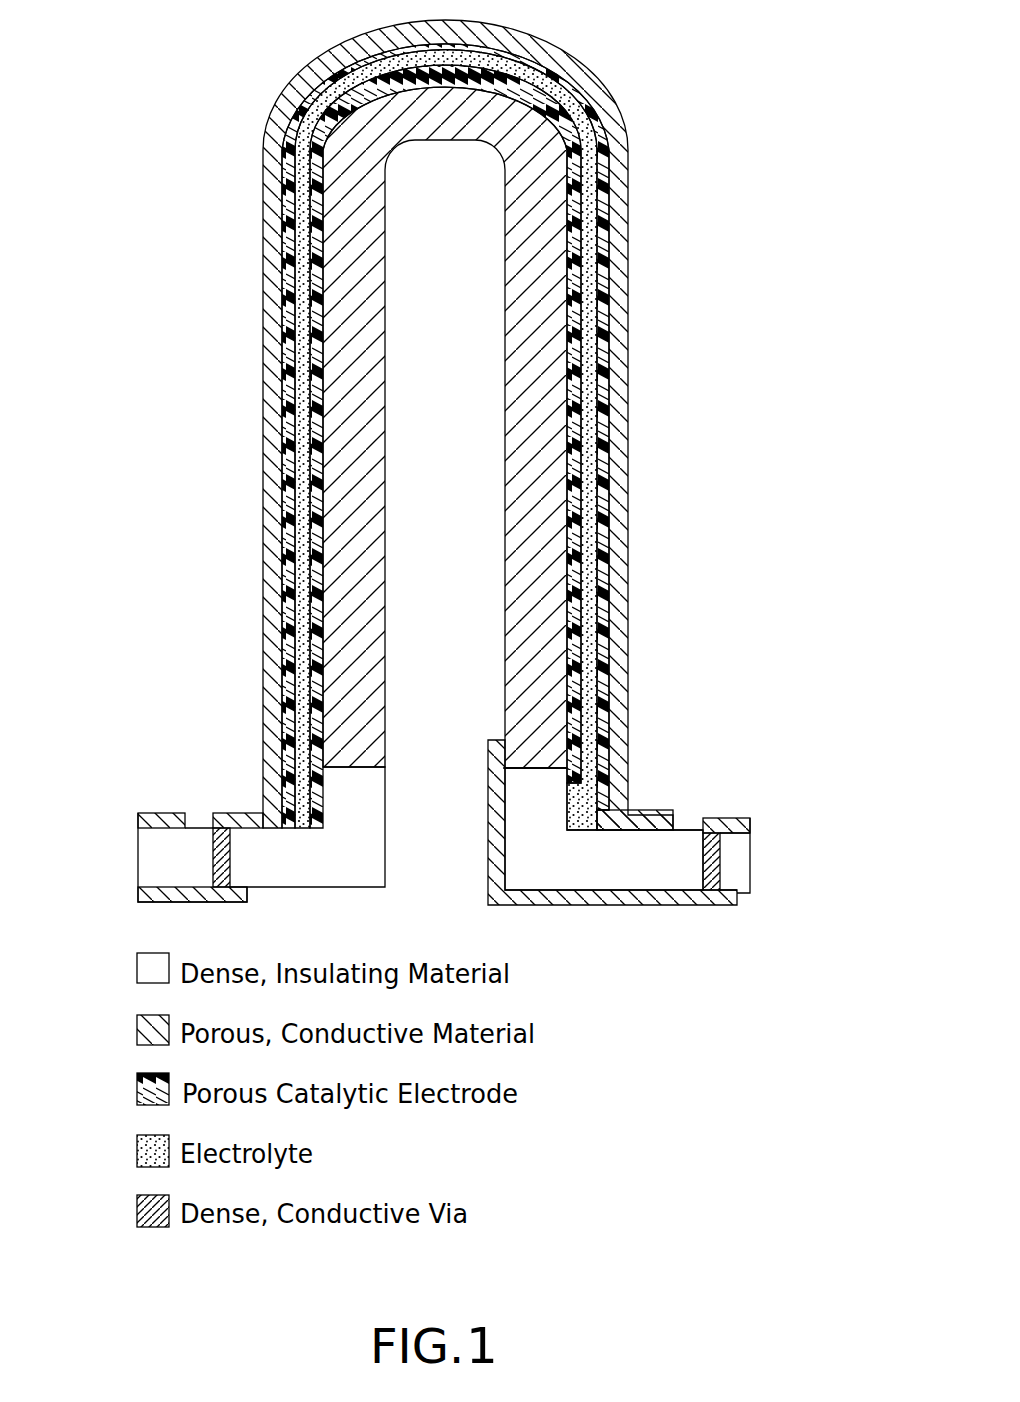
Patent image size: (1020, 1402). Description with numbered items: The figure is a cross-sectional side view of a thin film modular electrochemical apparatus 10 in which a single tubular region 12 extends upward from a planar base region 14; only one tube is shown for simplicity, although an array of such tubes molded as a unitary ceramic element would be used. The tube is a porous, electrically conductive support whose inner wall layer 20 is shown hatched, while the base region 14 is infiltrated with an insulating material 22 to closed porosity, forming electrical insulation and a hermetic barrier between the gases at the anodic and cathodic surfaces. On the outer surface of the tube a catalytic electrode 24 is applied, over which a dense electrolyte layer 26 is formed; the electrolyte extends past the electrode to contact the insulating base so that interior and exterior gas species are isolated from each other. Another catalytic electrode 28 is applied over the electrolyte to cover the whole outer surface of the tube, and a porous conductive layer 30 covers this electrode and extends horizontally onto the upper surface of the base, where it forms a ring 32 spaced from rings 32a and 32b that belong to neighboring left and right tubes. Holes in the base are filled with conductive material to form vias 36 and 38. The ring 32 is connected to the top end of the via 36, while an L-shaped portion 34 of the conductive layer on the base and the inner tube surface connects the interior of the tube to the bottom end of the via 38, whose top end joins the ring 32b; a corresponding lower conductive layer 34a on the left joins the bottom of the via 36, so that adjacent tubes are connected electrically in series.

The thin film modular electrochemical apparatus 10 is at (668, 435).
The tubular region 12 is at (660, 323).
The planar base region 14 is at (677, 855).
The porous conductive inner support layer 20 is at (522, 538).
The insulating material 22 is at (658, 873).
The catalytic electrode 24 is at (575, 542).
The electrolyte layer 26 is at (588, 583).
The catalytic electrode 28 is at (603, 633).
The porous conductive layer 30 is at (620, 490).
The ring 32 is at (222, 817).
The ring 32a is at (148, 818).
The ring 32b is at (740, 818).
The L-shaped portion 34 is at (588, 902).
The porous conductive layer 34a is at (158, 893).
The via 36 is at (217, 865).
The via 38 is at (720, 865).